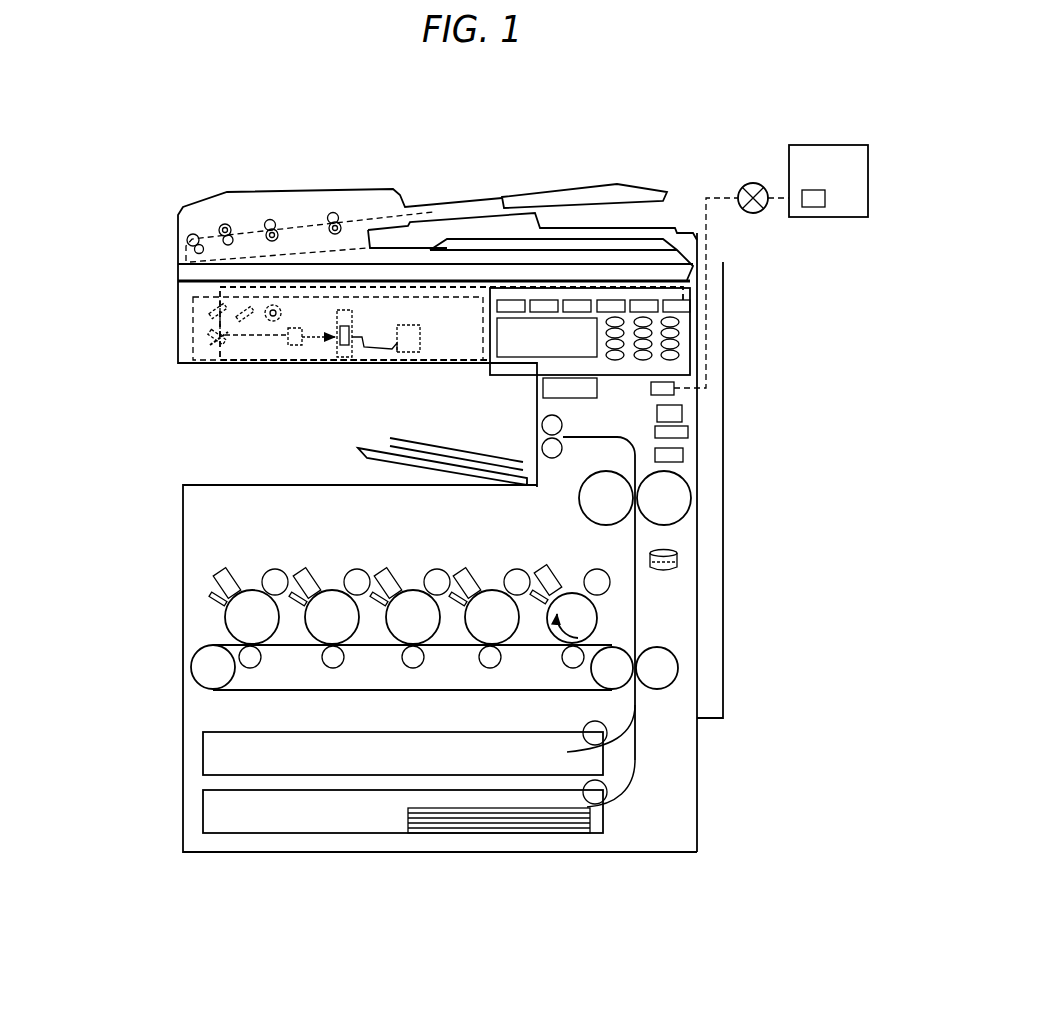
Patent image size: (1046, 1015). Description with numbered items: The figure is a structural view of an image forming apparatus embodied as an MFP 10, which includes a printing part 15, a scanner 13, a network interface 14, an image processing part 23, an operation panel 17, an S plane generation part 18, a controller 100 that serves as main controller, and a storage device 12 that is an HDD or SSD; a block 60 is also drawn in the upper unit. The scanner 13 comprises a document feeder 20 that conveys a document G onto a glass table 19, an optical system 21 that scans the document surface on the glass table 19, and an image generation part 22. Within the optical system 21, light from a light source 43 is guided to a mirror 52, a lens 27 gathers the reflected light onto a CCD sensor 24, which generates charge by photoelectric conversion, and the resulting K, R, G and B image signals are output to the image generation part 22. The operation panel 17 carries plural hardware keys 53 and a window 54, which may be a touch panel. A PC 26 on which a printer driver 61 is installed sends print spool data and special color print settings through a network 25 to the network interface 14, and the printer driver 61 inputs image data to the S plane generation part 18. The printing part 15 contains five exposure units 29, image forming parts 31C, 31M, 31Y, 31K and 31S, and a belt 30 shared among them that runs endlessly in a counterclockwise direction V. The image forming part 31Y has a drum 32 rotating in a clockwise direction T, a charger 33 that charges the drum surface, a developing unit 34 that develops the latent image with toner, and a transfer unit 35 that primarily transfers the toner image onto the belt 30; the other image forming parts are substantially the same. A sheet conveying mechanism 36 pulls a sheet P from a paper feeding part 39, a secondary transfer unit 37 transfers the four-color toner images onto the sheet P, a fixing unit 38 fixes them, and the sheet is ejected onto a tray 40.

The MFP 10 is at (265, 165).
The document feeder 20 is at (177, 230).
The document G is at (586, 185).
The scanner 13 is at (177, 357).
The glass table 19 is at (223, 292).
The optical system 21 is at (192, 325).
The mirror 52 is at (214, 347).
The light source 43 is at (282, 311).
The lens 27 is at (295, 346).
The CCD sensor 24 is at (367, 328).
The image generation part 22 is at (420, 337).
The operation panel 17 is at (639, 344).
The window 54 is at (510, 347).
The hardware keys 53 is at (677, 332).
The controller 60 is at (545, 390).
The network interface 14 is at (673, 389).
The network 25 is at (747, 183).
The PC 26 is at (828, 154).
The printer driver 61 is at (815, 198).
The S plane generation part 18 is at (672, 414).
The controller 100 is at (688, 432).
The image processing part 23 is at (675, 456).
The printing part 15 is at (180, 516).
The sheet conveying mechanism 36 is at (660, 730).
The tray 40 is at (358, 448).
The sheet P is at (392, 438).
The fixing unit 38 is at (673, 508).
The storage device 12 is at (677, 562).
The secondary transfer unit 37 is at (672, 666).
The paper feeding part 39 is at (233, 812).
The belt 30 is at (348, 688).
The transfer unit 35 is at (565, 665).
The counterclockwise direction V is at (355, 657).
The image forming part for special color 31S is at (212, 580).
The image forming part for black 31K is at (290, 572).
The image forming part for cyan 31C is at (370, 572).
The image forming part for magenta 31M is at (450, 572).
The image forming part for yellow 31Y is at (544, 610).
The exposure unit 29 is at (550, 575).
The charger 33 is at (537, 607).
The developing unit 34 is at (595, 582).
The drum 32 is at (558, 659).
The clockwise direction T is at (568, 626).